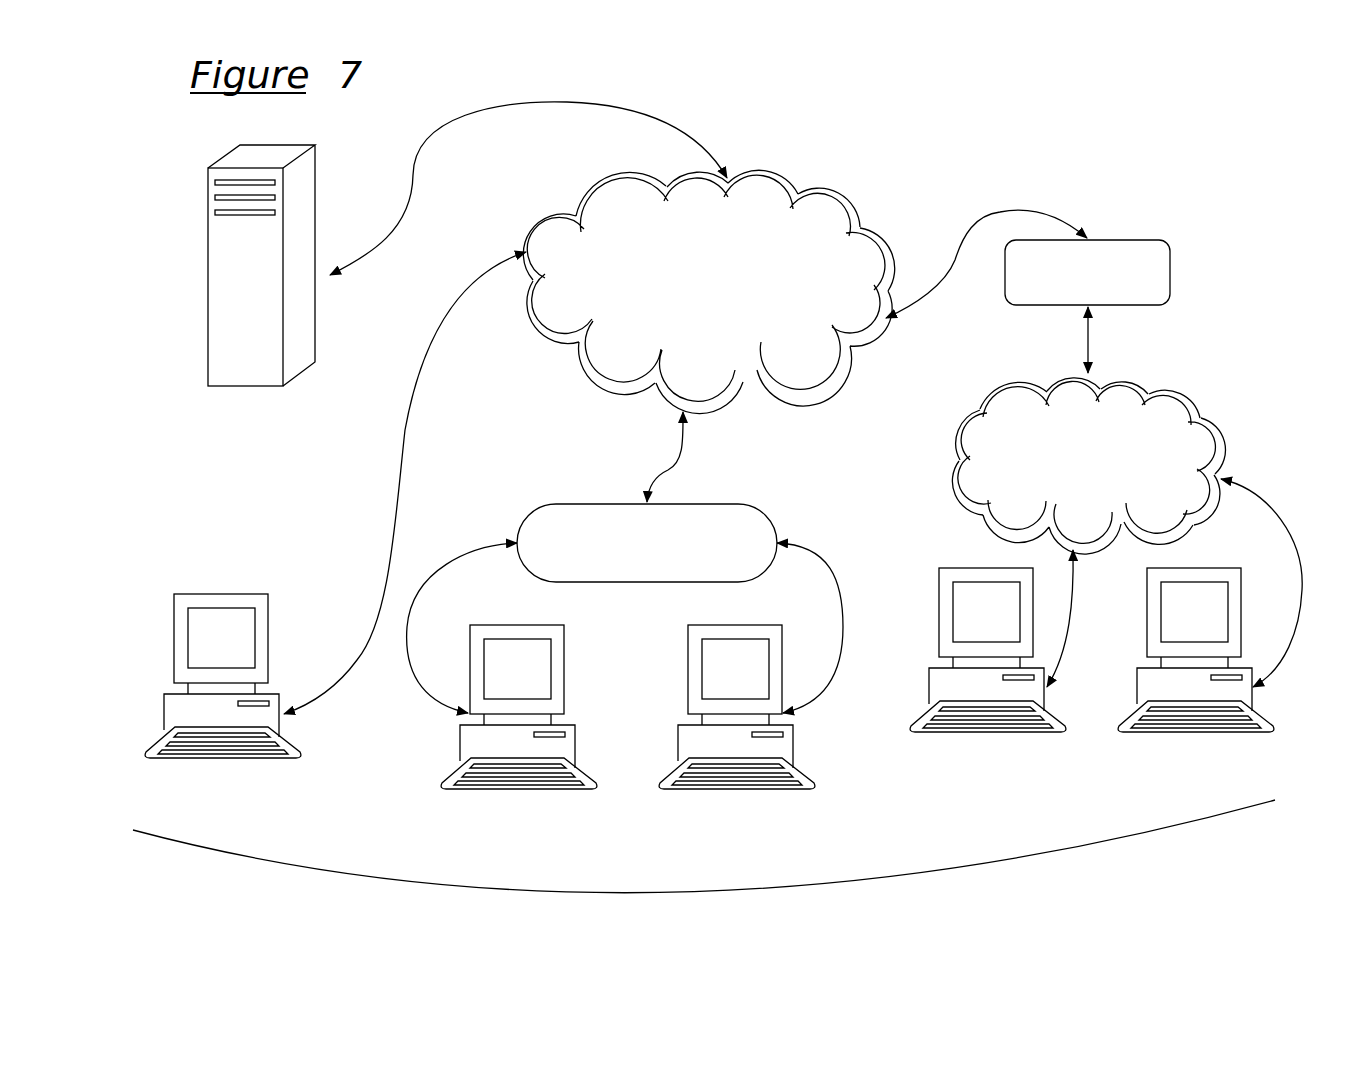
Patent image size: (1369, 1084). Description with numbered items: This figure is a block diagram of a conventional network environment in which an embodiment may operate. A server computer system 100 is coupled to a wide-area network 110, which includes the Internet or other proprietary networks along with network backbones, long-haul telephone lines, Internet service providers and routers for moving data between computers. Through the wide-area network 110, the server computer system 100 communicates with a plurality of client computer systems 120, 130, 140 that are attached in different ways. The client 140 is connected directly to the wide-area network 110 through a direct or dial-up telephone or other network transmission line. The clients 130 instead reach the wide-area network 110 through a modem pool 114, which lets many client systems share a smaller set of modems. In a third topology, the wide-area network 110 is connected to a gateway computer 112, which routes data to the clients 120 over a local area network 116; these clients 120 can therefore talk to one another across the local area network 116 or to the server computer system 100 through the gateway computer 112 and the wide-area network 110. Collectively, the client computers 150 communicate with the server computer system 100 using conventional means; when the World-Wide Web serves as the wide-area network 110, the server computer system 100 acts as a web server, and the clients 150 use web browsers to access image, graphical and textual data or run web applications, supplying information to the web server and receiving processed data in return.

The server computer system 100 is at (208, 182).
The wide-area network 110 is at (783, 180).
The gateway computer 112 is at (1133, 233).
The modem pool 114 is at (611, 500).
The local area network 116 is at (1160, 380).
The client computer systems 120 is at (968, 568).
The client computer systems 130 is at (452, 752).
The client computer system 140 is at (217, 583).
The client computers 150 is at (704, 878).